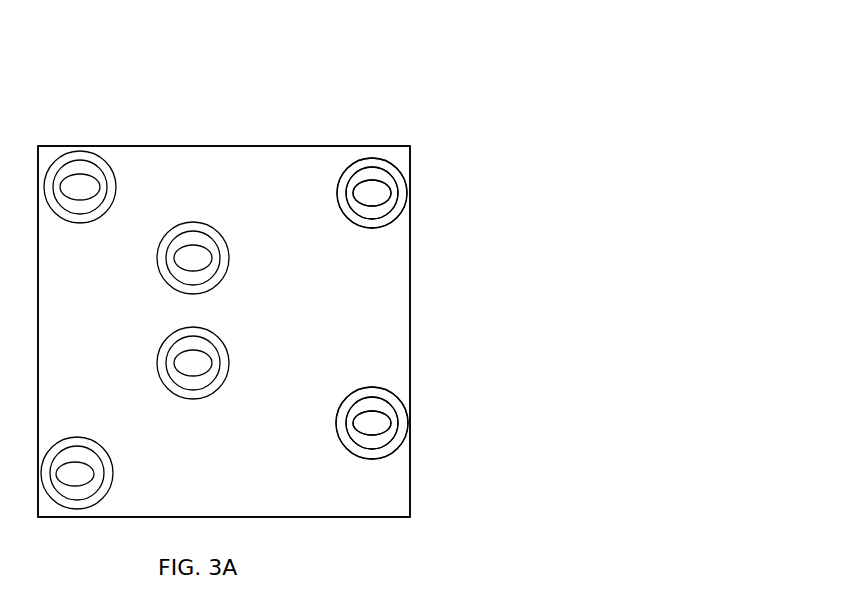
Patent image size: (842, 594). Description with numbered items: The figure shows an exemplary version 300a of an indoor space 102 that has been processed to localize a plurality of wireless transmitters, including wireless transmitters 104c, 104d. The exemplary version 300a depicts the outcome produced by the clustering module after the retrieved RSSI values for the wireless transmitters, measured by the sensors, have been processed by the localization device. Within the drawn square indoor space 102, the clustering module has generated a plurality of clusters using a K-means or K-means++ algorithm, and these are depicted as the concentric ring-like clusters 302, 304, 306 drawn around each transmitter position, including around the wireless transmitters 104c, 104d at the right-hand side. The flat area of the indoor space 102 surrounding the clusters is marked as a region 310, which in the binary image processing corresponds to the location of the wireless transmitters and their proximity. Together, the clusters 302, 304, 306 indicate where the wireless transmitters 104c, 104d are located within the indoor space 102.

The exemplary version 300a is at (495, 85).
The indoor space 102 is at (222, 146).
The wireless transmitter 104c is at (372, 432).
The wireless transmitter 104d is at (378, 192).
The cluster 302 is at (386, 179).
The cluster 304 is at (397, 197).
The cluster 306 is at (370, 205).
The white region 310 is at (363, 315).